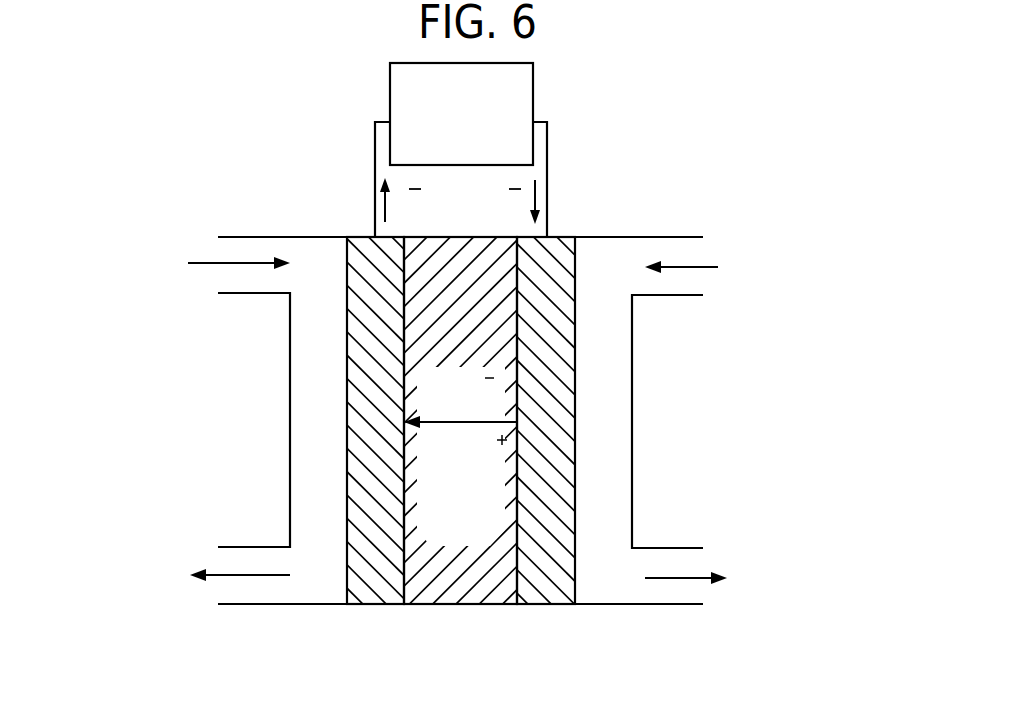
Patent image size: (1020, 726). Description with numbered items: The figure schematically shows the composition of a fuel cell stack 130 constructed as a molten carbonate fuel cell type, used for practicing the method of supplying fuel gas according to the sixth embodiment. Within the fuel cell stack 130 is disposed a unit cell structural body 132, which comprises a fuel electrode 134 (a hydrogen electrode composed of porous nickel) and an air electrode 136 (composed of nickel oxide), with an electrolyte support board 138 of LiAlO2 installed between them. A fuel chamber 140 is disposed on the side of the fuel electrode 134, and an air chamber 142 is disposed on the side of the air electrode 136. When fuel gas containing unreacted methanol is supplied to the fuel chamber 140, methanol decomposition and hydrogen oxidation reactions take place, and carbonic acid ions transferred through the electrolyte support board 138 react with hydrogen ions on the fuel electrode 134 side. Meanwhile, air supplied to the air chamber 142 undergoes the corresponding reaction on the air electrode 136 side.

The fuel cell stack 130 is at (621, 193).
The unit cell structural body 132 is at (456, 425).
The fuel electrode 134 is at (392, 604).
The air electrode 136 is at (551, 604).
The electrolyte support board 138 is at (462, 604).
The fuel chamber 140 is at (302, 417).
The air chamber 142 is at (704, 433).